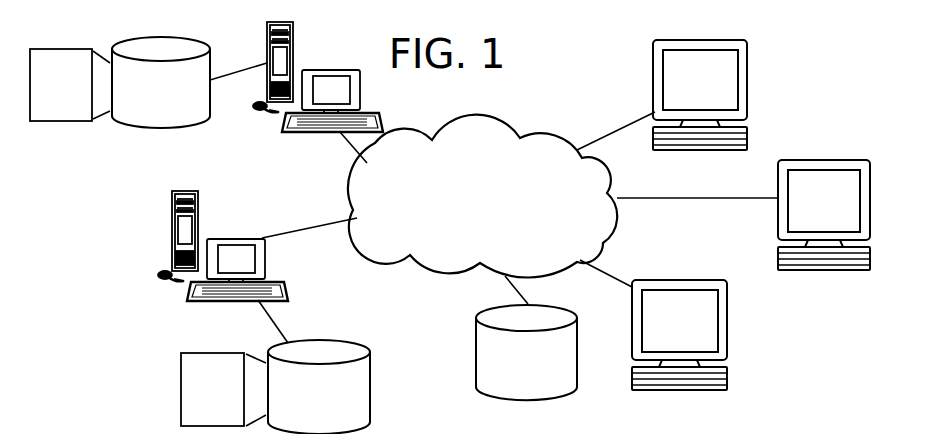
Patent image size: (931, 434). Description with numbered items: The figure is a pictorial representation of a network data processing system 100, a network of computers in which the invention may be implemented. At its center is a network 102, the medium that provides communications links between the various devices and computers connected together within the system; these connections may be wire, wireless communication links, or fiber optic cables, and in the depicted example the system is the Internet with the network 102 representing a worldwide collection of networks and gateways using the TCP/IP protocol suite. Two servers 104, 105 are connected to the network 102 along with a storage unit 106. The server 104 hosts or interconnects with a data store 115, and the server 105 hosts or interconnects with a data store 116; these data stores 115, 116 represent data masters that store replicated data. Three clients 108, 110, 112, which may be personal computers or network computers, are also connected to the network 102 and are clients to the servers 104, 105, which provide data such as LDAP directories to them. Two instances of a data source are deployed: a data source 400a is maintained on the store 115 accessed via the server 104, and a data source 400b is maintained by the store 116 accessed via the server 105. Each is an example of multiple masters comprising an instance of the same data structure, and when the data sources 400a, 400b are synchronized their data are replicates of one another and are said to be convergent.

The network data processing system 100 is at (468, 103).
The network 102 is at (502, 192).
The server 104 is at (200, 223).
The server 105 is at (333, 68).
The storage unit 106 is at (563, 308).
The client 108 is at (662, 40).
The client 110 is at (786, 160).
The client 112 is at (640, 283).
The data store 115 is at (360, 345).
The data store 116 is at (188, 41).
The data source 400a is at (223, 389).
The data source 400b is at (70, 85).